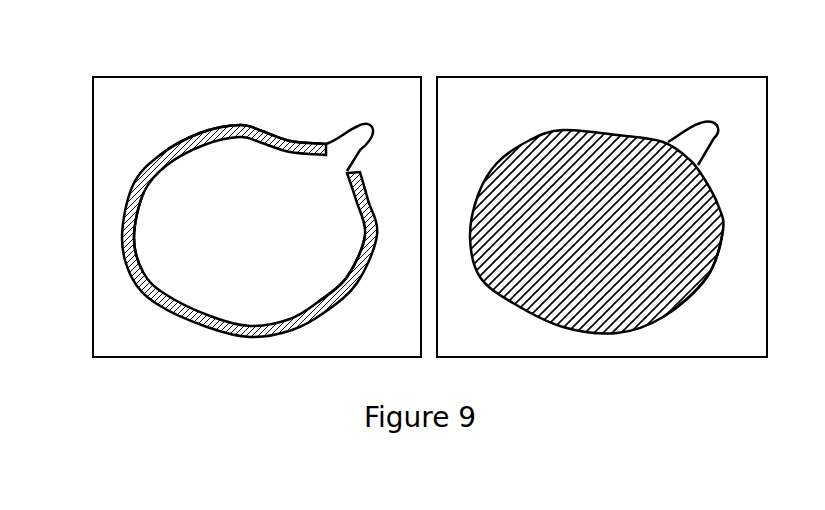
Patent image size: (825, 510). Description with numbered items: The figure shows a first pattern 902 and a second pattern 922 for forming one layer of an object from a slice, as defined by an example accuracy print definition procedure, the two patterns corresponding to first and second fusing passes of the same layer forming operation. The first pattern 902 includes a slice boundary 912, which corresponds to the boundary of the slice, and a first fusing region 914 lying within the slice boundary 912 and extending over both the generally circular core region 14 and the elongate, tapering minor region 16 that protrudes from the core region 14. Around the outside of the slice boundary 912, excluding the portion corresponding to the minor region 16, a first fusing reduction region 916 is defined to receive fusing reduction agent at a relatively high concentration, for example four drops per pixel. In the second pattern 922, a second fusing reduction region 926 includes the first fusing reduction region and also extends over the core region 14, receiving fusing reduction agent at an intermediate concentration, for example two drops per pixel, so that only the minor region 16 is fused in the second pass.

The first pattern 902 is at (376, 51).
The second pattern 922 is at (722, 51).
The slice boundary 912 is at (187, 163).
The first fusing region 914 is at (192, 255).
The first fusing reduction region 916 is at (270, 134).
The core region 14 is at (313, 250).
The minor region 16 is at (358, 143).
The second fusing reduction region 926 is at (533, 260).